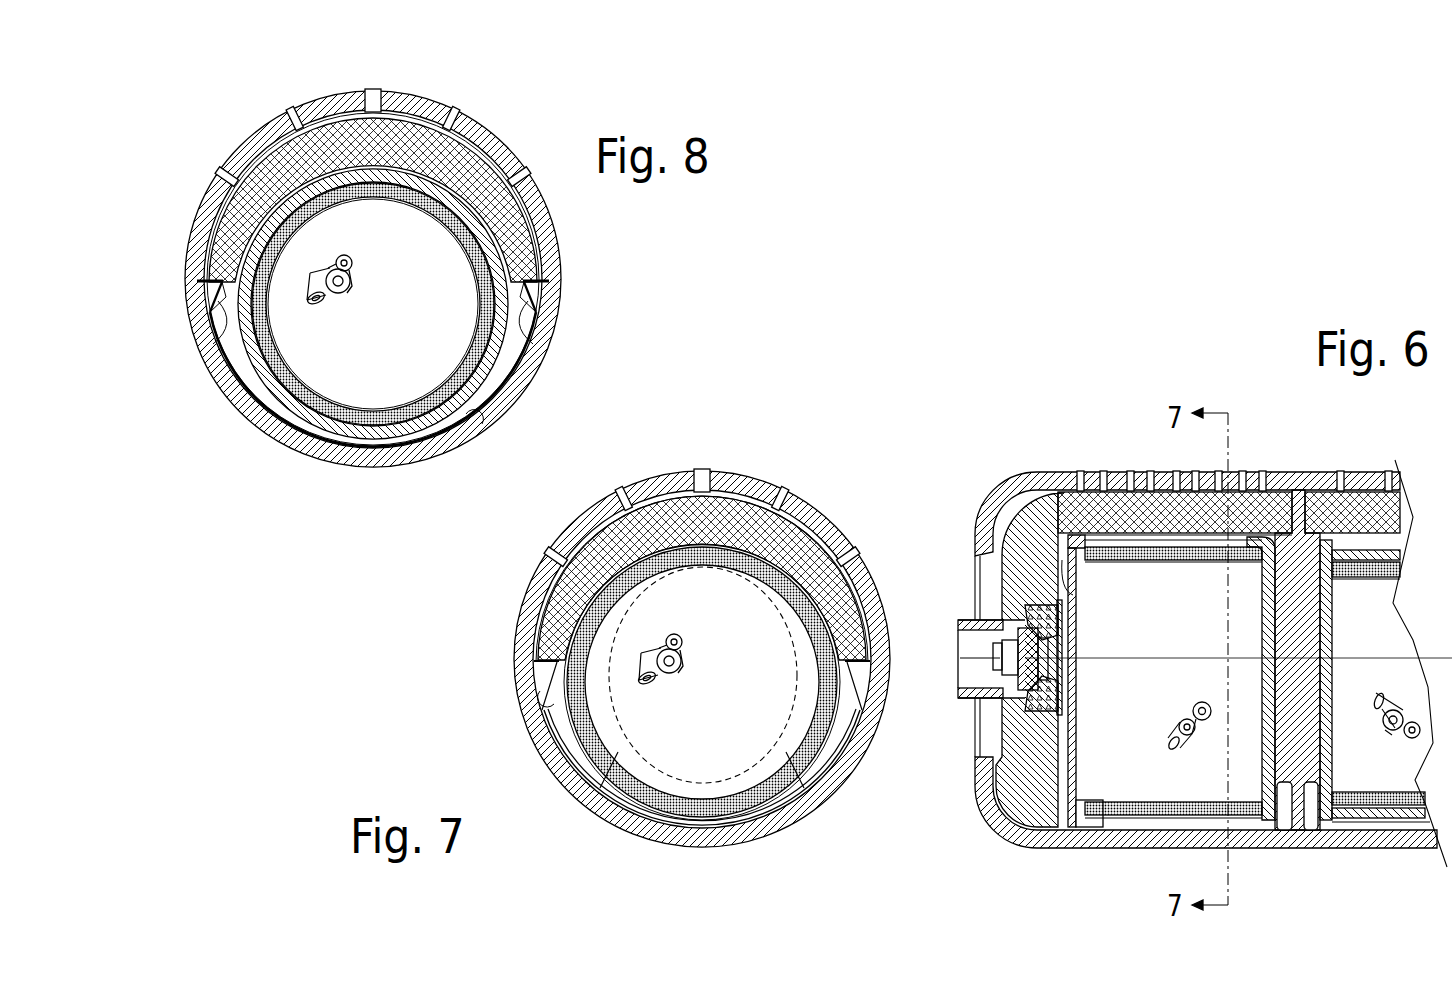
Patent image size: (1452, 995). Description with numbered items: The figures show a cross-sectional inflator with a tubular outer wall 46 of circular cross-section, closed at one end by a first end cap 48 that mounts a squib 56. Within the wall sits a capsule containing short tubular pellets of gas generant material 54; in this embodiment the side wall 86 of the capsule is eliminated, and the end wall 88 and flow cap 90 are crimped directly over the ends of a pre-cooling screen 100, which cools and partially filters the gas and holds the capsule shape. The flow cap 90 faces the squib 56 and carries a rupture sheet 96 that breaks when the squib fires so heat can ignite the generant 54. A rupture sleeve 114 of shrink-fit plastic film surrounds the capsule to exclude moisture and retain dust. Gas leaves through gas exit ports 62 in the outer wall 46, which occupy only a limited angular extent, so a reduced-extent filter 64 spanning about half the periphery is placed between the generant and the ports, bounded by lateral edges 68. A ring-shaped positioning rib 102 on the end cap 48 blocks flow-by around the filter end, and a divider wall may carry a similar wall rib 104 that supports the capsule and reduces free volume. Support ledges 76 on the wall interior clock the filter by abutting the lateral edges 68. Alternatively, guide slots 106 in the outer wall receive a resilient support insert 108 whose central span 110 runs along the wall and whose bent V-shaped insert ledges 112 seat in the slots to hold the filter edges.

In FIG. 8, the outer wall 46 is at (302, 453).
In FIG. 7, the outer wall 46 is at (555, 753).
In FIG. 6, the outer wall 46 is at (1008, 477).
In FIG. 6, the first end cap 48 is at (998, 590).
In FIG. 8, the gas generant material 54 is at (357, 278).
In FIG. 7, the gas generant material 54 is at (690, 650).
In FIG. 6, the gas generant material 54 is at (1177, 717).
In FIG. 6, the squib 56 is at (1023, 668).
In FIG. 8, the gas exit ports 62 is at (222, 172).
In FIG. 6, the gas exit ports 62 is at (1177, 472).
In FIG. 8, the filter 64 is at (242, 208).
In FIG. 7, the filter 64 is at (618, 525).
In FIG. 6, the filter 64 is at (1097, 500).
In FIG. 8, the lateral edges 68 is at (549, 281).
In FIG. 7, the support ledges 76 is at (545, 700).
In FIG. 8, the side wall 86 is at (270, 398).
In FIG. 6, the side wall 86 is at (1420, 672).
In FIG. 6, the end wall 88 is at (1262, 620).
In FIG. 7, the flow cap 90 is at (595, 793).
In FIG. 6, the flow cap 90 is at (1087, 775).
In FIG. 6, the rupture sheet 96 is at (1073, 678).
In FIG. 8, the pre-cooling screen 100 is at (322, 397).
In FIG. 6, the pre-cooling screen 100 is at (1150, 800).
In FIG. 7, the positioning rib 102 is at (667, 743).
In FIG. 6, the positioning rib 102 is at (1063, 567).
In FIG. 6, the wall rib 104 is at (1308, 785).
In FIG. 8, the guide slots 106 is at (548, 296).
In FIG. 8, the support insert 108 is at (529, 340).
In FIG. 8, the central span 110 is at (484, 410).
In FIG. 8, the insert ledge 112 is at (206, 362).
In FIG. 7, the rupture sleeve 114 is at (787, 790).
In FIG. 6, the rupture sleeve 114 is at (1143, 820).